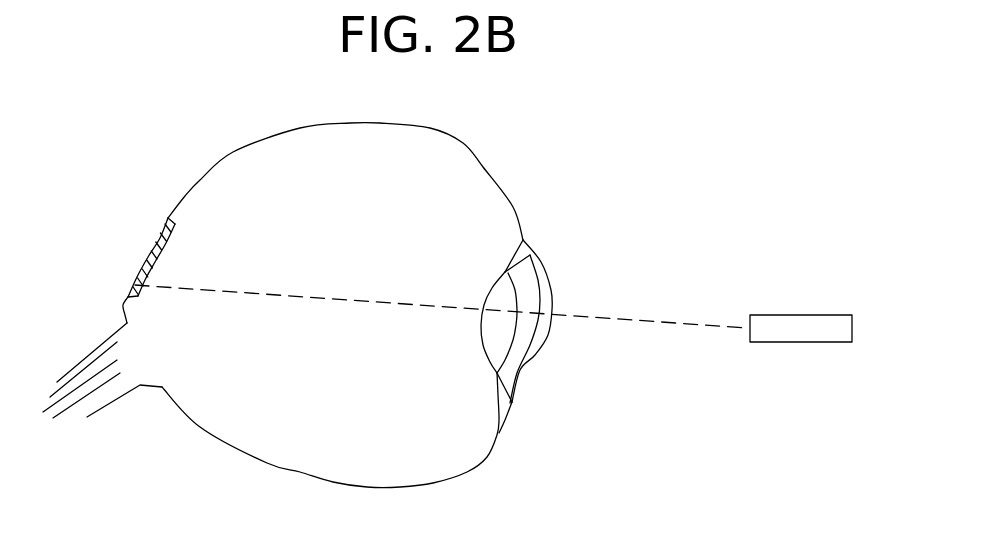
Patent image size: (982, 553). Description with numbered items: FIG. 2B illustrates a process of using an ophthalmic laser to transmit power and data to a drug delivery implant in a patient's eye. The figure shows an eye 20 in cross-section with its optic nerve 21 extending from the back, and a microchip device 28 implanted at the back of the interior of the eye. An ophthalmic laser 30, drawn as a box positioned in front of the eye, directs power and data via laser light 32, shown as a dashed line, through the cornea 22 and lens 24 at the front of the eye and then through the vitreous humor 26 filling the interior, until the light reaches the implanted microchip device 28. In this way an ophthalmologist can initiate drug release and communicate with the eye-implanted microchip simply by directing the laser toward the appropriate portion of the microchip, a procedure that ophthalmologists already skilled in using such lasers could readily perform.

The eye 20 is at (492, 148).
The optic nerve 21 is at (103, 388).
The cornea 22 is at (553, 295).
The lens 24 is at (493, 343).
The vitreous humor 26 is at (364, 208).
The microchip device 28 is at (157, 245).
The ophthalmic laser 30 is at (810, 328).
The laser light 32 is at (632, 322).